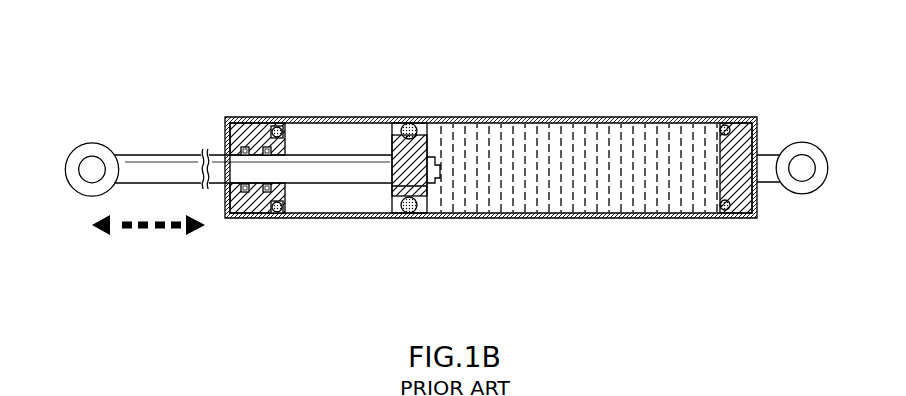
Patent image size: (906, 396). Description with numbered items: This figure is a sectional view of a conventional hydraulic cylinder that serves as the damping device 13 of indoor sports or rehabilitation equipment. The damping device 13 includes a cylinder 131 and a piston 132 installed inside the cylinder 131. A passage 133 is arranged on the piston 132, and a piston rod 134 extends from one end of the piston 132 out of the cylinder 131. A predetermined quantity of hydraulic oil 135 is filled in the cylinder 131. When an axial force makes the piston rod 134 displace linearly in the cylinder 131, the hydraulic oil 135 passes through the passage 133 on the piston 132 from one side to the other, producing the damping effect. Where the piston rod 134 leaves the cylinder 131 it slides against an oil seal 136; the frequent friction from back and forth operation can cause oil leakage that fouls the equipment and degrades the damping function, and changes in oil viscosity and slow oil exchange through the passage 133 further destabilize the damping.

The damping device 13 is at (209, 56).
The cylinder 131 is at (632, 118).
The piston 132 is at (432, 121).
The passage 133 is at (418, 190).
The piston rod 134 is at (327, 167).
The hydraulic oil 135 is at (635, 187).
The oil seal 136 is at (245, 193).